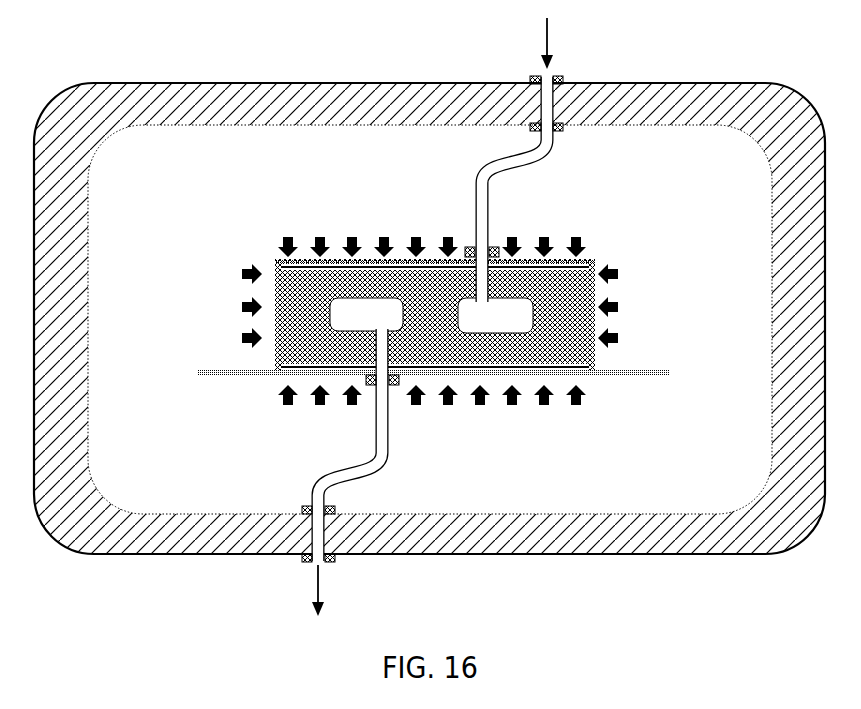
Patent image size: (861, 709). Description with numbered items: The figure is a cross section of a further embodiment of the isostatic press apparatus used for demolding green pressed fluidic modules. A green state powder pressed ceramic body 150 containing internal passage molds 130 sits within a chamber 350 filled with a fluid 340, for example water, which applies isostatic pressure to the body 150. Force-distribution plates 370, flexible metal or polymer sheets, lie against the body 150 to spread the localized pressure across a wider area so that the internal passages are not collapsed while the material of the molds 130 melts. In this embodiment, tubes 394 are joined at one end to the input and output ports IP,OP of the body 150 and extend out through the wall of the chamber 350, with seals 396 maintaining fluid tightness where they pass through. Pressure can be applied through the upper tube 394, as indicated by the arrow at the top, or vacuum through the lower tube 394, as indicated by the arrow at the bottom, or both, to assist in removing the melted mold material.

The internal passage mold 130 is at (362, 317).
The green state powder pressed ceramic body 150 is at (547, 350).
The fluid 340 is at (687, 473).
The chamber 350 is at (588, 538).
The force-distribution plate 370 is at (350, 266).
The tube 394 is at (476, 183).
The seal 396 is at (533, 76).
The input port / output port IP,OP is at (483, 285).